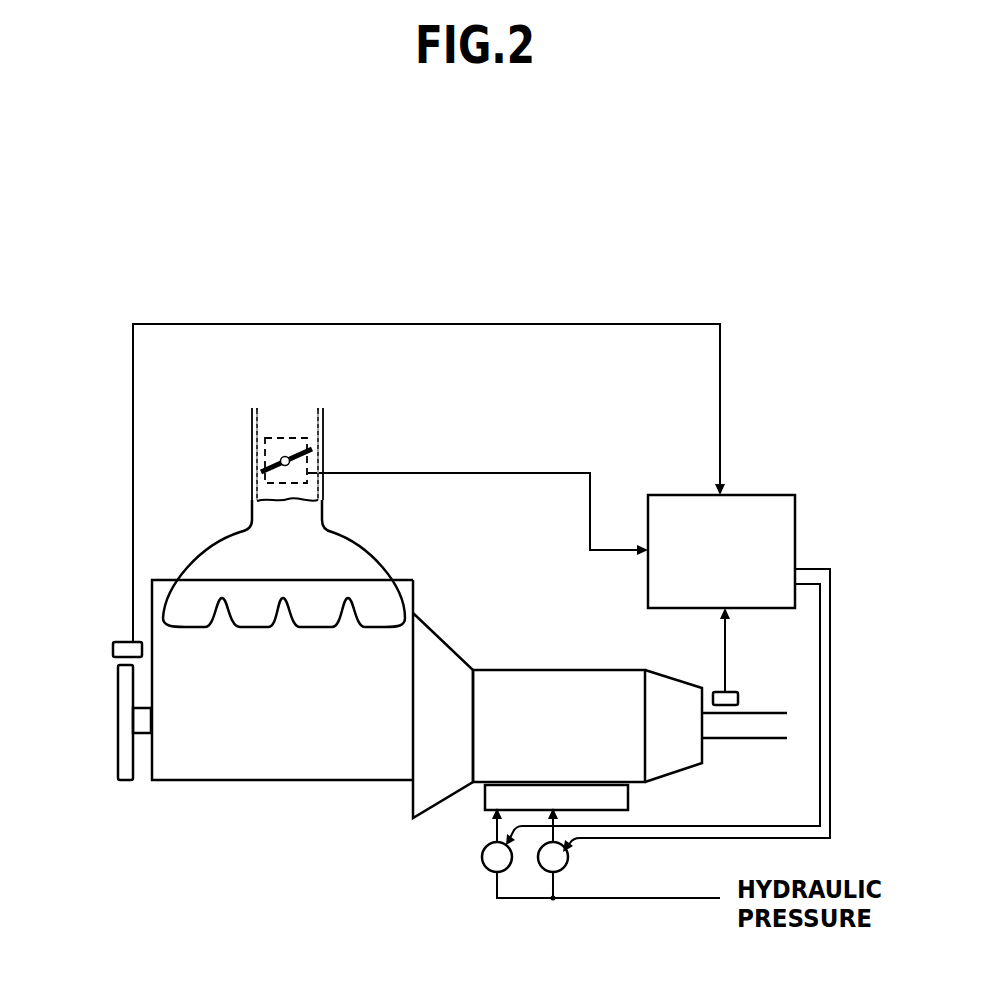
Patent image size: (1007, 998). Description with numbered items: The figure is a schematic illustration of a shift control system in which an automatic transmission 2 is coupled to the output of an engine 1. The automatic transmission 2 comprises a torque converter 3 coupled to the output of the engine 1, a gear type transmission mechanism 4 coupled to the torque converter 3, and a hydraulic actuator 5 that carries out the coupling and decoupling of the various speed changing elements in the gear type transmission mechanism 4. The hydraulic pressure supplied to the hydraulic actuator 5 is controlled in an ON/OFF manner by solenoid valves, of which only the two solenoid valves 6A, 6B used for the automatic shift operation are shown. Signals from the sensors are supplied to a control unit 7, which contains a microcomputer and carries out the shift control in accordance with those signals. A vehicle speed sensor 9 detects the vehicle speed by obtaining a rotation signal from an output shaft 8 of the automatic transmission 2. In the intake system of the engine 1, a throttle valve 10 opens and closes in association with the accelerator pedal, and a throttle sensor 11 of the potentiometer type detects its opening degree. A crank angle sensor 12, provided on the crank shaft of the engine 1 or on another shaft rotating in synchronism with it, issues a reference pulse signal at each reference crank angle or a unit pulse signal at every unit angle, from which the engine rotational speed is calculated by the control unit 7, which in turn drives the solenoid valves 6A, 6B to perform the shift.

The engine 1 is at (402, 575).
The automatic transmission 2 is at (600, 699).
The torque converter 3 is at (450, 727).
The gear type transmission mechanism 4 is at (570, 740).
The hydraulic actuator 5 is at (628, 797).
The solenoid valve 6A is at (487, 867).
The solenoid valve 6B is at (567, 865).
The control unit 7 is at (773, 495).
The output shaft 8 is at (755, 740).
The vehicle speed sensor 9 is at (717, 690).
The throttle valve 10 is at (265, 470).
The throttle sensor 11 is at (306, 438).
The crank angle sensor 12 is at (114, 643).